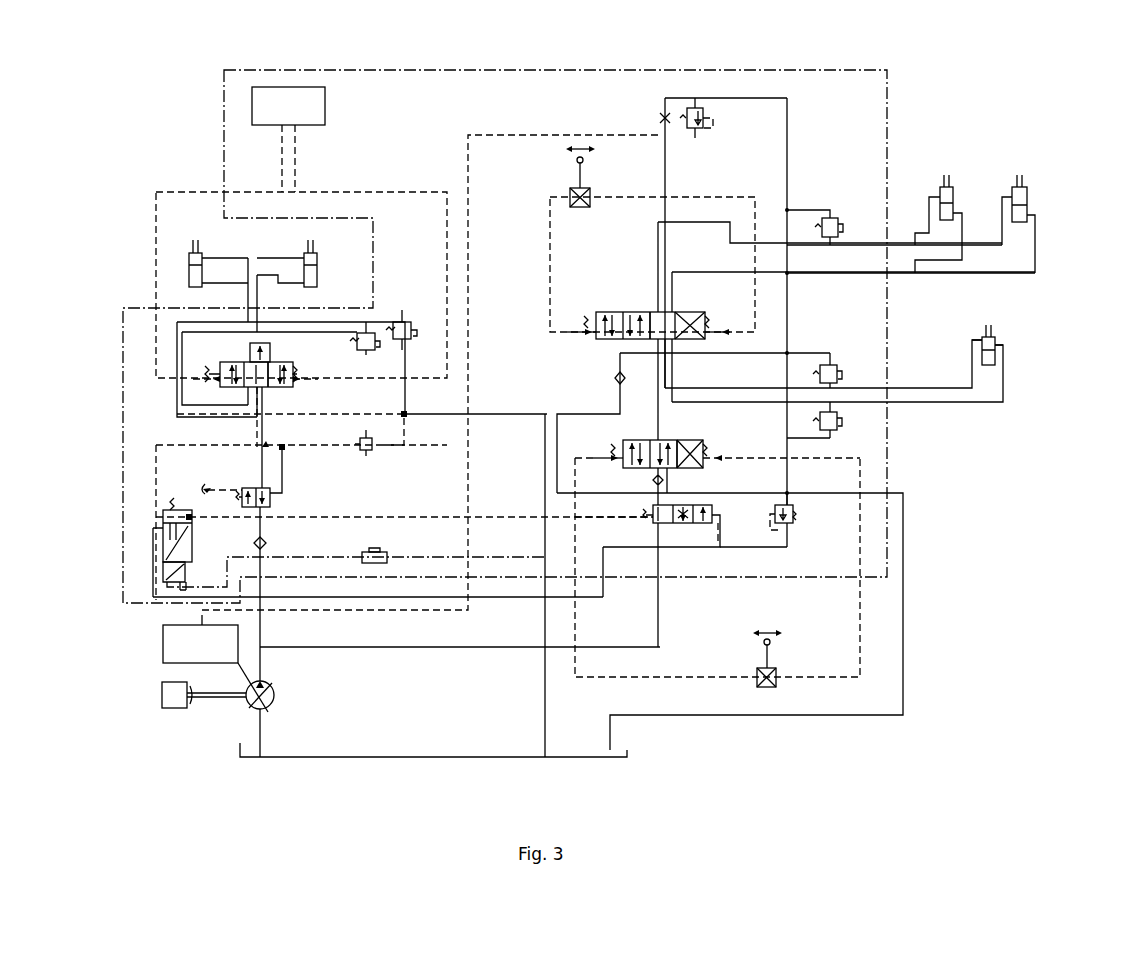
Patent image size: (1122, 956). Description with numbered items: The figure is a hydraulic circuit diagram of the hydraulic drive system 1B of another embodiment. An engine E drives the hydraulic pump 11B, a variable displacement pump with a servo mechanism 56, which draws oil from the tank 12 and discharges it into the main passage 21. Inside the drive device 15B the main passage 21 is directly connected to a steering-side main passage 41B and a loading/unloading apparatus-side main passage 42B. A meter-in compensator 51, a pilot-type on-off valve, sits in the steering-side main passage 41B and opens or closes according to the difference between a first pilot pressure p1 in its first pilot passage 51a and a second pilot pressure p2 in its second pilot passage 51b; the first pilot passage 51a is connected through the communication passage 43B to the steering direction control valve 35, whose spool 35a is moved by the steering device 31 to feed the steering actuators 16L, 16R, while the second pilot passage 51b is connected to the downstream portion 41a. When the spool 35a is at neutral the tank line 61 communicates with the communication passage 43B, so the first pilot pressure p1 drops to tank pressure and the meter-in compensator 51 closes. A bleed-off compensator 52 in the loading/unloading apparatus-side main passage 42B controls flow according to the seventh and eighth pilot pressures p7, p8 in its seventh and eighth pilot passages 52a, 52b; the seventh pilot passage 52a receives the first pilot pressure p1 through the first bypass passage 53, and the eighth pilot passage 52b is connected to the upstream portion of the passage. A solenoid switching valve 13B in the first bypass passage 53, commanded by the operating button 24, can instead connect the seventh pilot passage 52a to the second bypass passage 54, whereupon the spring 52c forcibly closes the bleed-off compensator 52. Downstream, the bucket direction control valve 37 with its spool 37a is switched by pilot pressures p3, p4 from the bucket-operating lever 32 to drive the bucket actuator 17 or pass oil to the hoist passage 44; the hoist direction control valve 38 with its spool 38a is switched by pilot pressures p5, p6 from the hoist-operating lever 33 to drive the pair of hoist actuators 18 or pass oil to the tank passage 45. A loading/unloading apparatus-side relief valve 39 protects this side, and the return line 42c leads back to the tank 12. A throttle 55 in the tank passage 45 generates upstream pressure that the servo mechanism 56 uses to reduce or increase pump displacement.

The hydraulic drive system 1B is at (1068, 80).
The control device 15B is at (572, 70).
The steering device 31 is at (290, 87).
The steering actuator 16L is at (180, 260).
The steering actuator 16R is at (308, 262).
The steering direction control valve 35 is at (268, 389).
The spool 35a is at (290, 388).
The tank line 61 is at (404, 414).
The communication passage 43B is at (172, 445).
The first bypass passage 53 is at (432, 517).
The downstream portion of steering-side main passage 41a is at (262, 476).
The meter-in compensator 51 is at (282, 500).
The first pilot passage 51a is at (282, 482).
The second pilot passage 51b is at (228, 488).
The first pilot pressure p1 is at (282, 460).
The second pilot pressure p2 is at (199, 492).
The solenoid switching valve 13B is at (190, 521).
The operating button 24 is at (387, 555).
The steering-side main passage 41B is at (265, 631).
The main passage 21 is at (265, 668).
The hydraulic pump 11B is at (274, 697).
The engine E is at (170, 708).
The servo mechanism 56 is at (163, 648).
The return line 42c is at (423, 647).
The tank 12 is at (442, 760).
The second bypass passage 54 is at (507, 597).
The tank passage 45 is at (665, 170).
The throttle 55 is at (661, 118).
The hoist-operating lever 33 is at (584, 175).
The hoist direction control valve 38 is at (610, 308).
The spool 38a is at (645, 310).
The pilot pressure p5 is at (564, 323).
The pilot pressure p6 is at (725, 330).
The hoist passage 44 is at (665, 373).
The hoist actuators 18 is at (955, 188).
The bucket actuator 17 is at (1001, 348).
The bucket direction control valve 37 is at (680, 432).
The spool 37a is at (710, 468).
The pilot pressure p3 is at (585, 458).
The pilot pressure p4 is at (766, 458).
The bleed-off compensator 52 is at (716, 507).
The seventh pilot passage 52a is at (628, 545).
The eighth pilot passage 52b is at (717, 547).
The spring 52c is at (643, 513).
The seventh pilot pressure p7 is at (595, 520).
The eighth pilot pressure p8 is at (718, 523).
The loading/unloading apparatus-side relief valve 39 is at (790, 526).
The loading/unloading apparatus-side main passage 42B is at (667, 615).
The bucket-operating lever 32 is at (770, 657).